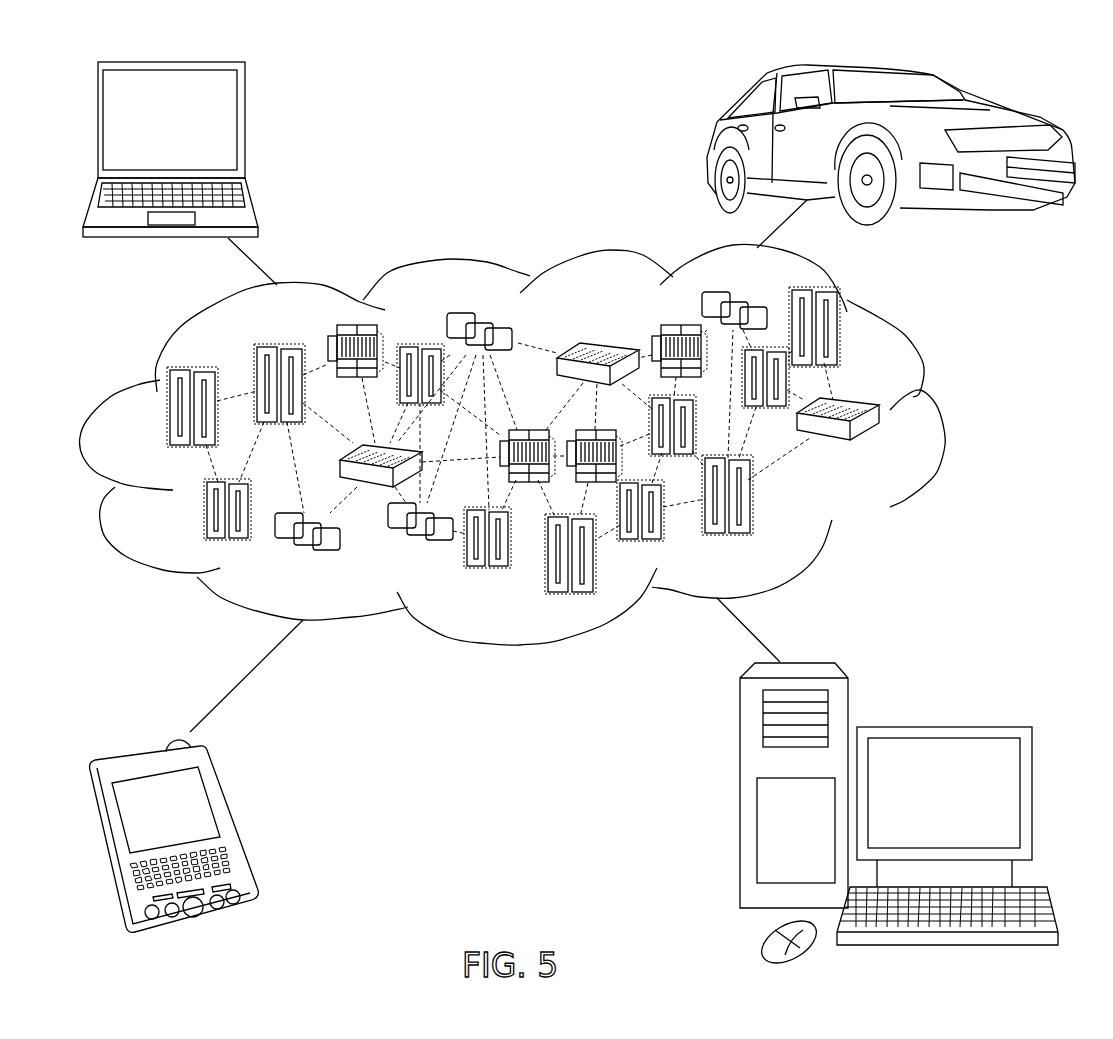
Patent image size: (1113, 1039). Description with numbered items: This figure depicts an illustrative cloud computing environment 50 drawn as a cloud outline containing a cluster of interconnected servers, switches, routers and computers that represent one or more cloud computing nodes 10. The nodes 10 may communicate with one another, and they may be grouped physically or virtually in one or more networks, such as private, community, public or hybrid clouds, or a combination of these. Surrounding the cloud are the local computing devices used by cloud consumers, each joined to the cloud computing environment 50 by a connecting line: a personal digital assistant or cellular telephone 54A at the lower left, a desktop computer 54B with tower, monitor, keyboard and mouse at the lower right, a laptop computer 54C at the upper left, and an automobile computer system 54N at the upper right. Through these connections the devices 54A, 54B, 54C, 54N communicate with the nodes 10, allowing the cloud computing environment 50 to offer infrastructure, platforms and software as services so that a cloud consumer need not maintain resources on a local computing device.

The cloud computing node 10 is at (877, 449).
The cloud computing environment 50 is at (942, 417).
The personal digital assistant or cellular telephone 54A is at (237, 822).
The desktop computer 54B is at (943, 723).
The laptop computer 54C is at (242, 127).
The automobile computer system 54N is at (712, 147).